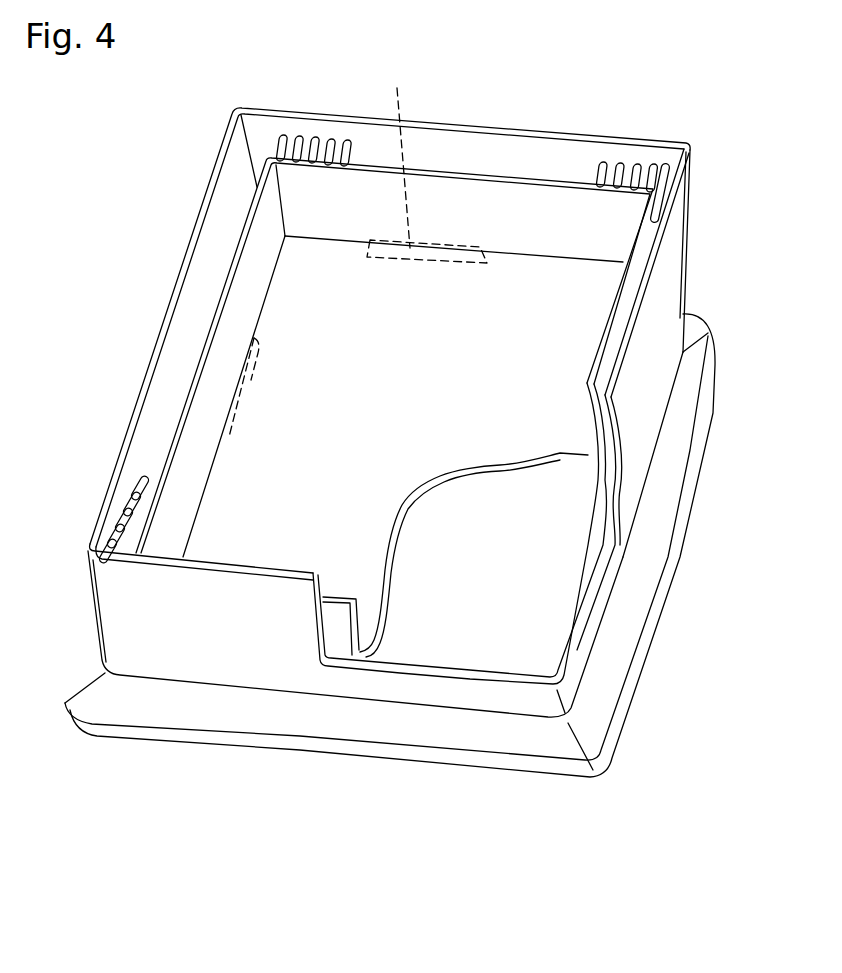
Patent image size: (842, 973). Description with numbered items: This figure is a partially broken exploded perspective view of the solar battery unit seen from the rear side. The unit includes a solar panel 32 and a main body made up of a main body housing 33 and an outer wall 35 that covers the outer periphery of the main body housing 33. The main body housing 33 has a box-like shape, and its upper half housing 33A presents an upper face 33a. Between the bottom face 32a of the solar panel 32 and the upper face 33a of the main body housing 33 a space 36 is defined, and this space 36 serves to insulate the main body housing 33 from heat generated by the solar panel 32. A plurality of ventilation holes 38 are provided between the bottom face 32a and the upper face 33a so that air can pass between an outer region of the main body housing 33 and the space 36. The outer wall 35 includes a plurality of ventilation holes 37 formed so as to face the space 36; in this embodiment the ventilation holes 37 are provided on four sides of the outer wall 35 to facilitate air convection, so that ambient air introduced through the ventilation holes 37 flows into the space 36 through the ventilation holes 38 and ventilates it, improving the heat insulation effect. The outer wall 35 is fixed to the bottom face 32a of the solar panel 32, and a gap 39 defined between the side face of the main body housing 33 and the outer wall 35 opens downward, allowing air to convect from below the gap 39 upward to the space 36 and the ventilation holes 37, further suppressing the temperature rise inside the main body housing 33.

The solar panel 32 is at (433, 760).
The bottom face of the solar panel 32a is at (547, 577).
The main body housing 33 is at (184, 370).
The upper half housing 33A is at (453, 210).
The upper face of the main body housing 33a is at (503, 468).
The outer wall 35 is at (518, 158).
The space 36 is at (423, 630).
The ventilation holes 37 is at (322, 138).
The ventilation holes 38 is at (237, 381).
The gap 39 is at (642, 262).